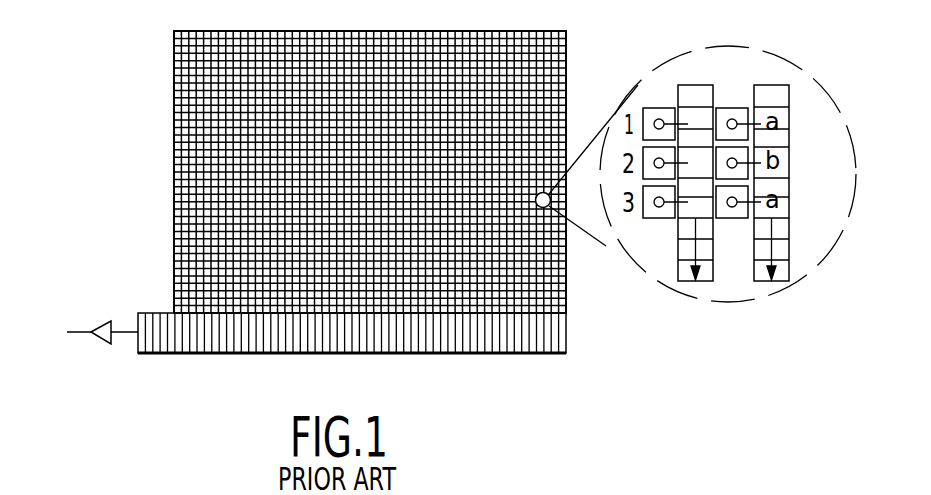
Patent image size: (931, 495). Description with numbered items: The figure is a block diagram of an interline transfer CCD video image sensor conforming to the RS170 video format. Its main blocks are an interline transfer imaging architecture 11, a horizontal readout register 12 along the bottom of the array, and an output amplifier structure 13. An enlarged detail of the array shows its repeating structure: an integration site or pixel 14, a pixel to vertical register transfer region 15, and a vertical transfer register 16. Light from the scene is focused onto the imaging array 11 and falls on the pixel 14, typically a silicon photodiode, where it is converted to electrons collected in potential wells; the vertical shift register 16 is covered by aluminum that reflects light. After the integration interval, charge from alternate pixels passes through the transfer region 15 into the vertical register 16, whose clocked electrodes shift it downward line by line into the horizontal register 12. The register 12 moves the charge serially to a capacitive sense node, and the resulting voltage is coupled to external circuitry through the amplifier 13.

The interline transfer imaging architecture 11 is at (164, 155).
The horizontal readout register 12 is at (498, 352).
The output amplifier structure 13 is at (90, 336).
The pixel 14 is at (632, 211).
The pixel to vertical register transfer region 15 is at (672, 217).
The vertical transfer register 16 is at (780, 76).